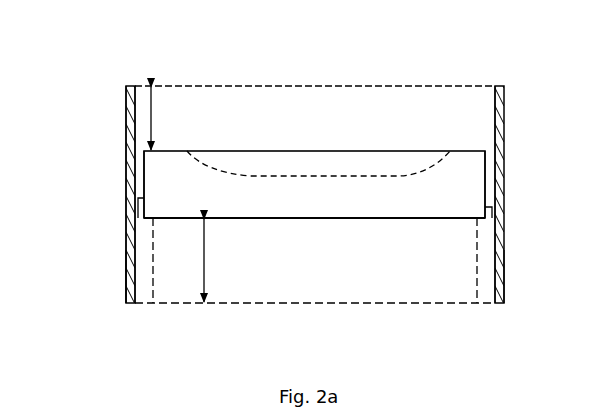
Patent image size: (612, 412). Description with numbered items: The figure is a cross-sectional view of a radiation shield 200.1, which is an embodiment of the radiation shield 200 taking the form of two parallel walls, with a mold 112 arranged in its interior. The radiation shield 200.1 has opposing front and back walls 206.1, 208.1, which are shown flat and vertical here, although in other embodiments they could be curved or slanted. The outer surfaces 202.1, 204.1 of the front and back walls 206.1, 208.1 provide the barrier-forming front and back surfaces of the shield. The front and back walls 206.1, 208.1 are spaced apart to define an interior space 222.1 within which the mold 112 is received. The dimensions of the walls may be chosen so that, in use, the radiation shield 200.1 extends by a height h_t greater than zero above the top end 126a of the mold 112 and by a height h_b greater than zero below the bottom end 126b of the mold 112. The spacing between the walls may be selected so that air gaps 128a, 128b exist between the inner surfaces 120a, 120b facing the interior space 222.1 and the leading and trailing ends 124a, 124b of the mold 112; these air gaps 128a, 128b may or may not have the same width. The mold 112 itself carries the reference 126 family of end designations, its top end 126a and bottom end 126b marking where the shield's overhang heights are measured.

The radiation shield 200 is at (307, 198).
The radiation shield 200.1 is at (522, 162).
The front wall 206.1 is at (504, 141).
The back wall 208.1 is at (126, 135).
The frame 126 is at (126, 256).
The surface of back wall 204.1 is at (126, 285).
The inner surface 120b is at (135, 297).
The surface of front wall 202.1 is at (505, 275).
The inner surface 120a is at (494, 292).
The interior space 222.1 is at (224, 106).
The top end of the mold 126a is at (469, 149).
The bottom end of the mold 126b is at (413, 219).
The mold 112 is at (329, 219).
The trailing end of the mold 124b is at (144, 182).
The leading end of the mold 124a is at (486, 183).
The air gap 128b is at (137, 205).
The air gap 128a is at (493, 209).